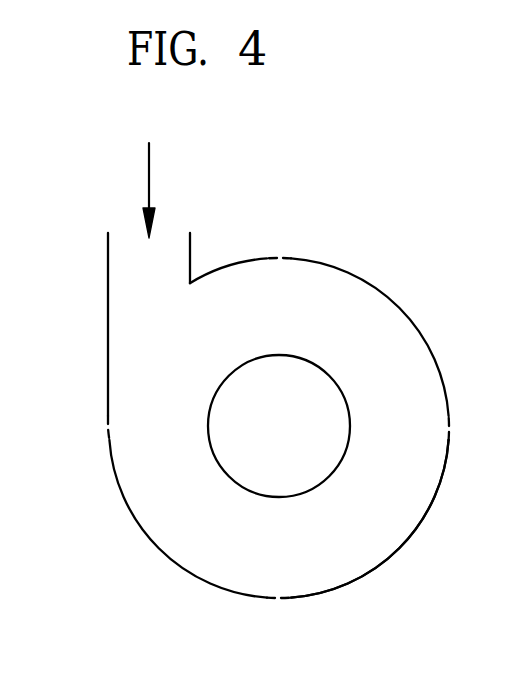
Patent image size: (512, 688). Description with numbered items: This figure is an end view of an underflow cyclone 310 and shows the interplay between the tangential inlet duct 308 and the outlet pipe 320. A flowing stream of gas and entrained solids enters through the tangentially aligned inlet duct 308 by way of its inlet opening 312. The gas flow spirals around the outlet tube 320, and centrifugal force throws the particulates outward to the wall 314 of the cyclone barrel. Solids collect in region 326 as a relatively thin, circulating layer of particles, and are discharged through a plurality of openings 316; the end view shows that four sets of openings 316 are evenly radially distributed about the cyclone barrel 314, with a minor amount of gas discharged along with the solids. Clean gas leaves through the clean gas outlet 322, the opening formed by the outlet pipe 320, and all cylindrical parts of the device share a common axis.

The inlet duct 308 is at (74, 324).
The cyclone 310 is at (287, 421).
The inlet opening 312 is at (209, 228).
The cyclone barrel wall 314 is at (378, 519).
The openings 316 is at (266, 432).
The outlet tube 320 is at (255, 424).
The clean gas outlet 322 is at (276, 394).
The solids collection region 326 is at (333, 552).